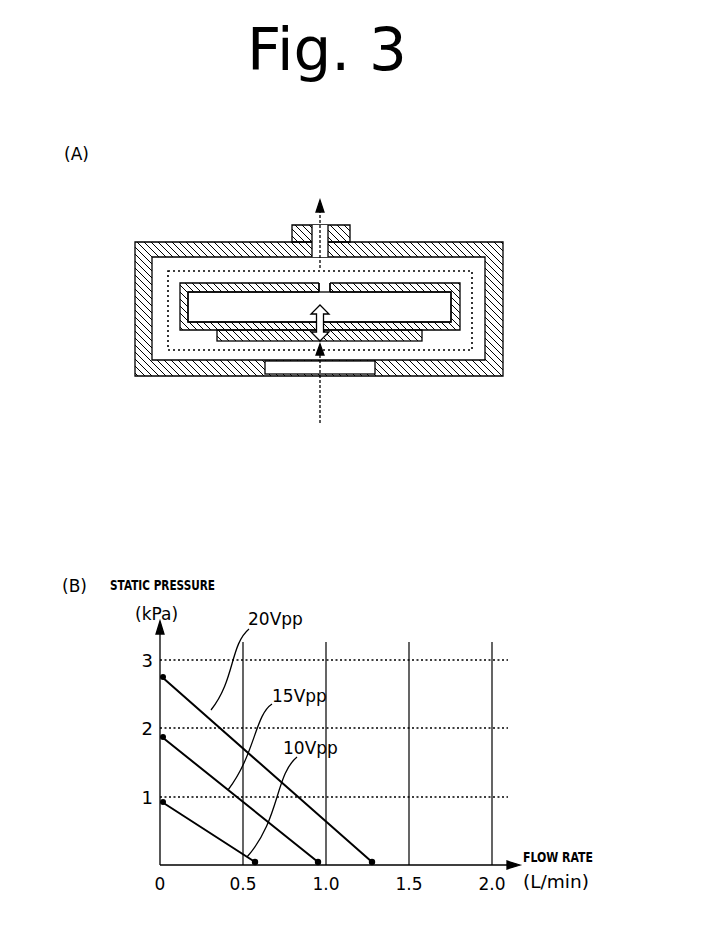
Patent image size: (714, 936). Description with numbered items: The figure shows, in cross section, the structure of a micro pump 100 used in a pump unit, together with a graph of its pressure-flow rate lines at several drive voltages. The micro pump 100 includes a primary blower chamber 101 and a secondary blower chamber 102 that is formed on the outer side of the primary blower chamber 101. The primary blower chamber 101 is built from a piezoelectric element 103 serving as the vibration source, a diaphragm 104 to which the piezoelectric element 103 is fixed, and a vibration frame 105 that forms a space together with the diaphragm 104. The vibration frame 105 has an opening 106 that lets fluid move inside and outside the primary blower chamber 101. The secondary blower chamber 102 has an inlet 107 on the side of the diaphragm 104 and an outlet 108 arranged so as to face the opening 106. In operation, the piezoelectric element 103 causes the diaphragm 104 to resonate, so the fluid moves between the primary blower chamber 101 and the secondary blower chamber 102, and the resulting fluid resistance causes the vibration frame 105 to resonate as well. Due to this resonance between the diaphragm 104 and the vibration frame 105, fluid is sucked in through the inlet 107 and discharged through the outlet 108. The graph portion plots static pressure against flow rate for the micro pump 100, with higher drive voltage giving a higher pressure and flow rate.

The micro pump 100 is at (269, 198).
The primary blower chamber 101 is at (230, 307).
The secondary blower chamber 102 is at (505, 311).
The piezoelectric element 103 is at (388, 338).
The diaphragm 104 is at (442, 328).
The vibration frame 105 is at (258, 292).
The opening 106 is at (323, 286).
The inlet 107 is at (372, 362).
The outlet 108 is at (314, 290).